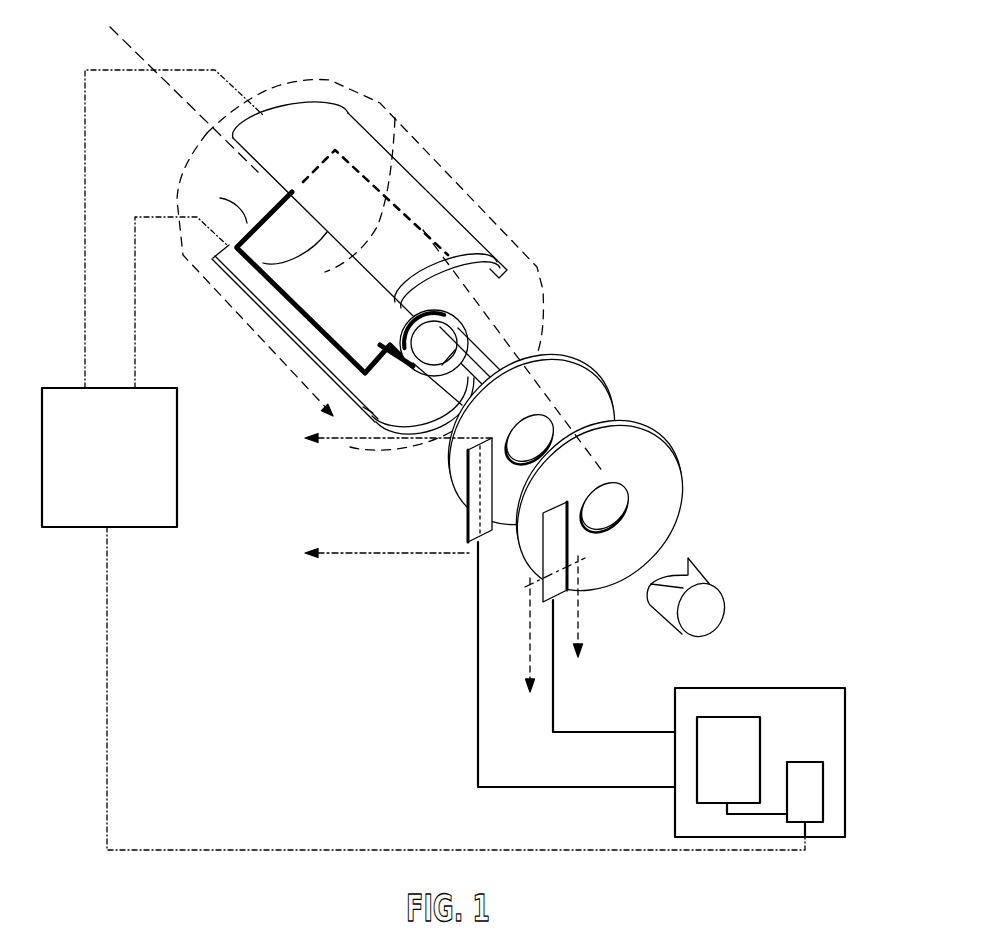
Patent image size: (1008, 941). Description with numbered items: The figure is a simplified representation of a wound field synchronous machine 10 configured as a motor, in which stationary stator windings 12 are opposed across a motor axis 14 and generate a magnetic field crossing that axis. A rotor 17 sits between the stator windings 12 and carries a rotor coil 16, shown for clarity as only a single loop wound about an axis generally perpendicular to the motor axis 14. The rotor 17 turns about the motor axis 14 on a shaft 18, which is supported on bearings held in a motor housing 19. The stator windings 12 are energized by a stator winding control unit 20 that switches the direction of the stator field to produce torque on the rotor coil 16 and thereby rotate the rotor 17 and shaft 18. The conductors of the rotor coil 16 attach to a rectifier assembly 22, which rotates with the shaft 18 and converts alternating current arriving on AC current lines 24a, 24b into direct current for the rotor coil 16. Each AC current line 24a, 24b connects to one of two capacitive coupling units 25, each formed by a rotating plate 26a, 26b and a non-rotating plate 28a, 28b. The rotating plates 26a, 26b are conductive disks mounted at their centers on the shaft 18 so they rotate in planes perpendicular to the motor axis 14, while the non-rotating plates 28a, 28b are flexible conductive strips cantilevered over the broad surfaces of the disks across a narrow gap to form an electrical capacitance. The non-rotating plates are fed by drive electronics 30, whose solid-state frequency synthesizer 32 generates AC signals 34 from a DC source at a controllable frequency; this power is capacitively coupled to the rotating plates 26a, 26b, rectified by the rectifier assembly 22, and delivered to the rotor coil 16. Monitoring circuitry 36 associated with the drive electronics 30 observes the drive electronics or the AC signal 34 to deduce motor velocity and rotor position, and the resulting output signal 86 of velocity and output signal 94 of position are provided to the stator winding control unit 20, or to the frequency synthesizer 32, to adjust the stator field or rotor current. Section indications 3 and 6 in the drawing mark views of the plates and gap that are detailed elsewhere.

The wound field synchronous machine 10 is at (494, 64).
The stator windings 12 is at (320, 104).
The motor axis 14 is at (158, 58).
The rotor coil 16 is at (250, 222).
The rotor 17 is at (211, 181).
The shaft 18 is at (710, 583).
The motor housing 19 is at (483, 211).
The stator winding control unit 20 is at (95, 452).
The rectifier assembly 22 is at (477, 307).
The AC current line 24a is at (478, 338).
The AC current line 24b is at (503, 357).
The capacitive coupling unit 25 is at (436, 471).
The rotating plate 26a is at (613, 408).
The rotating plate 26b is at (683, 474).
The non-rotating plate 28a is at (470, 528).
The non-rotating plate 28b is at (552, 602).
The drive electronics 30 is at (785, 730).
The frequency synthesizer 32 is at (715, 769).
The AC signals 34 is at (593, 733).
The monitoring circuitry 36 is at (805, 792).
The section line 3 is at (391, 497).
The direction arrow 6 is at (554, 636).
The output signal of velocity 86 is at (358, 850).
The output signal of position 94 is at (456, 688).